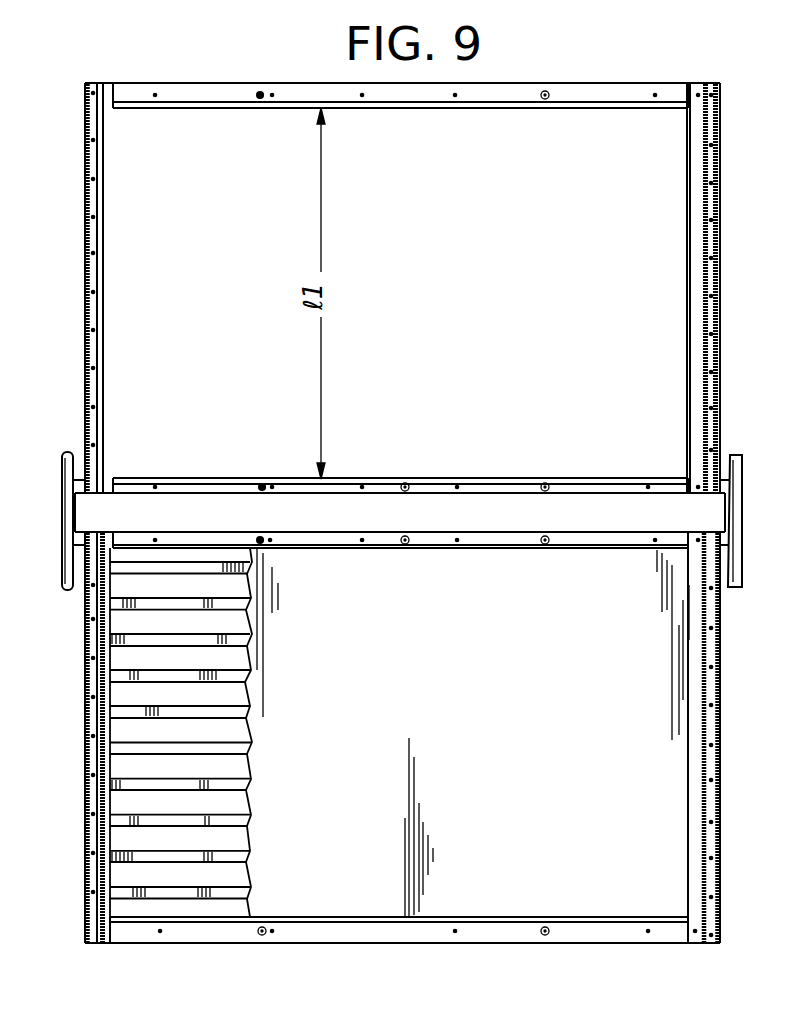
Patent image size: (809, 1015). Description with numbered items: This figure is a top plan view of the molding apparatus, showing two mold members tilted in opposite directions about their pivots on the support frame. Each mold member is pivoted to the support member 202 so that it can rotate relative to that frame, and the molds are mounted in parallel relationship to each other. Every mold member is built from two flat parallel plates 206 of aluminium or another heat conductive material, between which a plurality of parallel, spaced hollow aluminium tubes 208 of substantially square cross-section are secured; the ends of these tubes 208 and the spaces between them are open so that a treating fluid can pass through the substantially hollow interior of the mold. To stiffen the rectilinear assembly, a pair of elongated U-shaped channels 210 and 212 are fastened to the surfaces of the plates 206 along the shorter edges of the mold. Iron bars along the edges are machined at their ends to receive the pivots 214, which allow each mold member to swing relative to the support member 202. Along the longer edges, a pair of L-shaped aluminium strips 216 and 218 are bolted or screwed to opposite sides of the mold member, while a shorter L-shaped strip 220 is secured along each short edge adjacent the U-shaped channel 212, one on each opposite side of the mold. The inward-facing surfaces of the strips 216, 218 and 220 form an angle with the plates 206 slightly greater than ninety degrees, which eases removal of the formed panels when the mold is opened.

The support member 202 is at (63, 457).
The flat parallel plates 206 is at (600, 875).
The hollow aluminium tubes 208 is at (238, 737).
The U-shaped channel 210 is at (707, 793).
The U-shaped channel 212 is at (704, 200).
The pivots 214 is at (78, 530).
The L-shaped aluminium strip 216 is at (383, 484).
The L-shaped aluminium strip 218 is at (233, 95).
The shorter L-shaped aluminium strip 220 is at (700, 265).